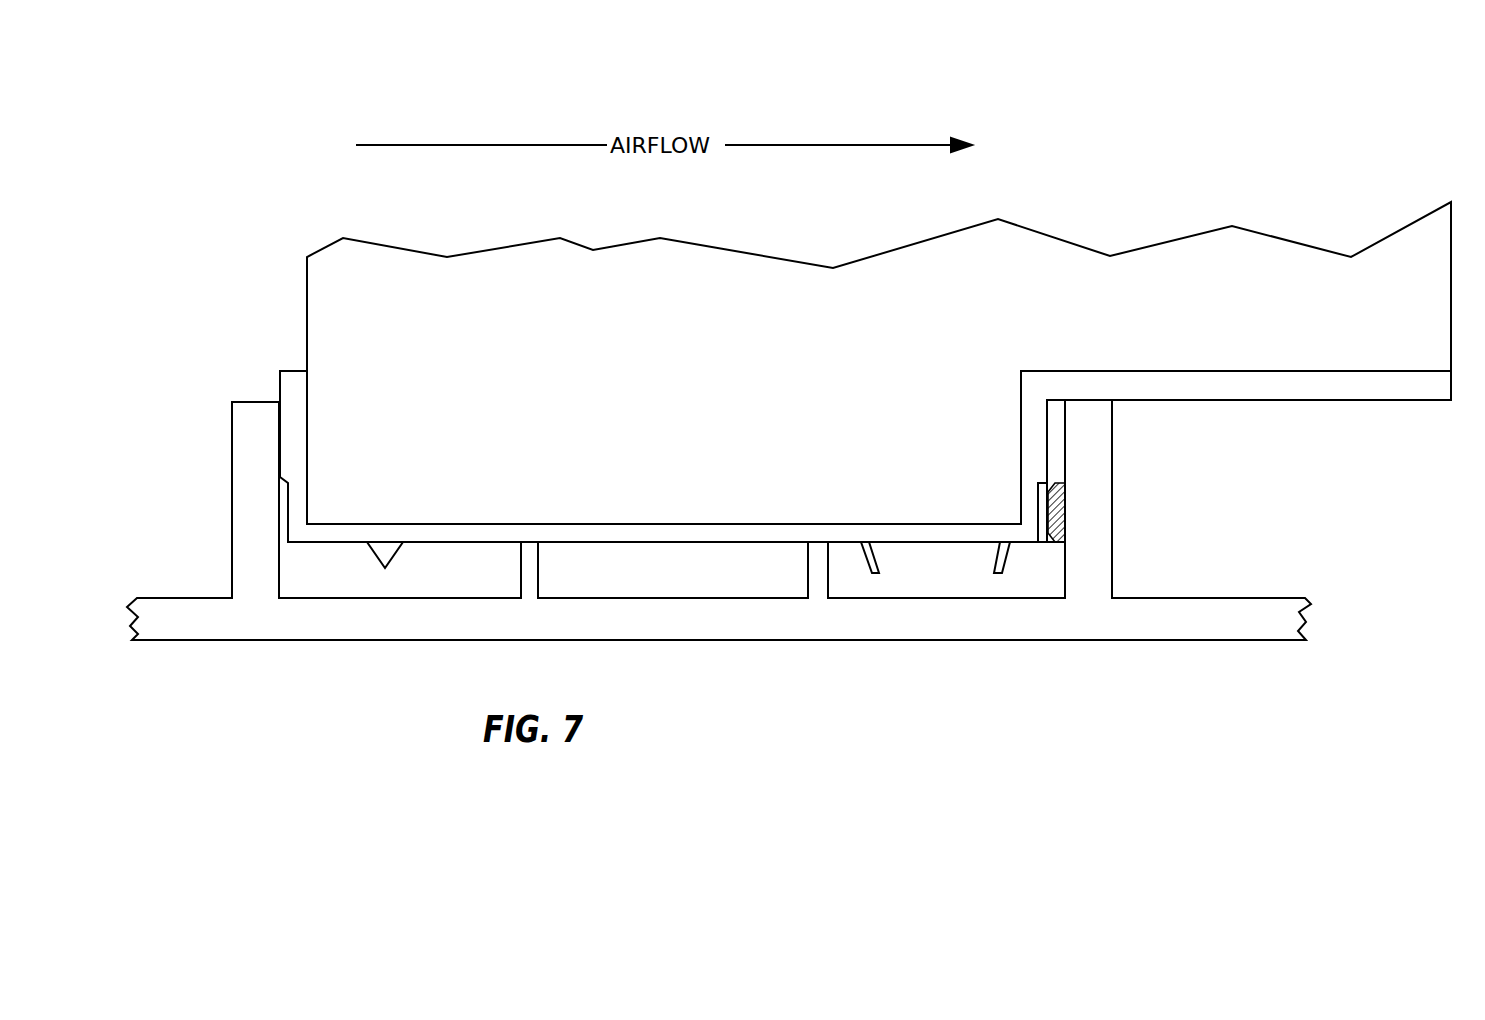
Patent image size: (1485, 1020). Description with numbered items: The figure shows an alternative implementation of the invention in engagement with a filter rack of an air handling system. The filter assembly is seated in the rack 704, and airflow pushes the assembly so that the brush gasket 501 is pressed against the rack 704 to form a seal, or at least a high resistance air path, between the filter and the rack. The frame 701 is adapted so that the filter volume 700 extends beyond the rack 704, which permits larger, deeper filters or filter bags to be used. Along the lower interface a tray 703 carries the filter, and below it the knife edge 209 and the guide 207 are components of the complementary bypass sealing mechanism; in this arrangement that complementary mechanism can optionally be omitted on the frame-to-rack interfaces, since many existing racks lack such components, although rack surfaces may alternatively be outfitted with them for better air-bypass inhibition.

The filter volume 700 is at (679, 394).
The frame 701 is at (1027, 420).
The tray 703 is at (707, 528).
The rack 704 is at (1287, 609).
The knife edge 209 is at (383, 552).
The guide 207 is at (997, 557).
The brush gasket 501 is at (1065, 508).